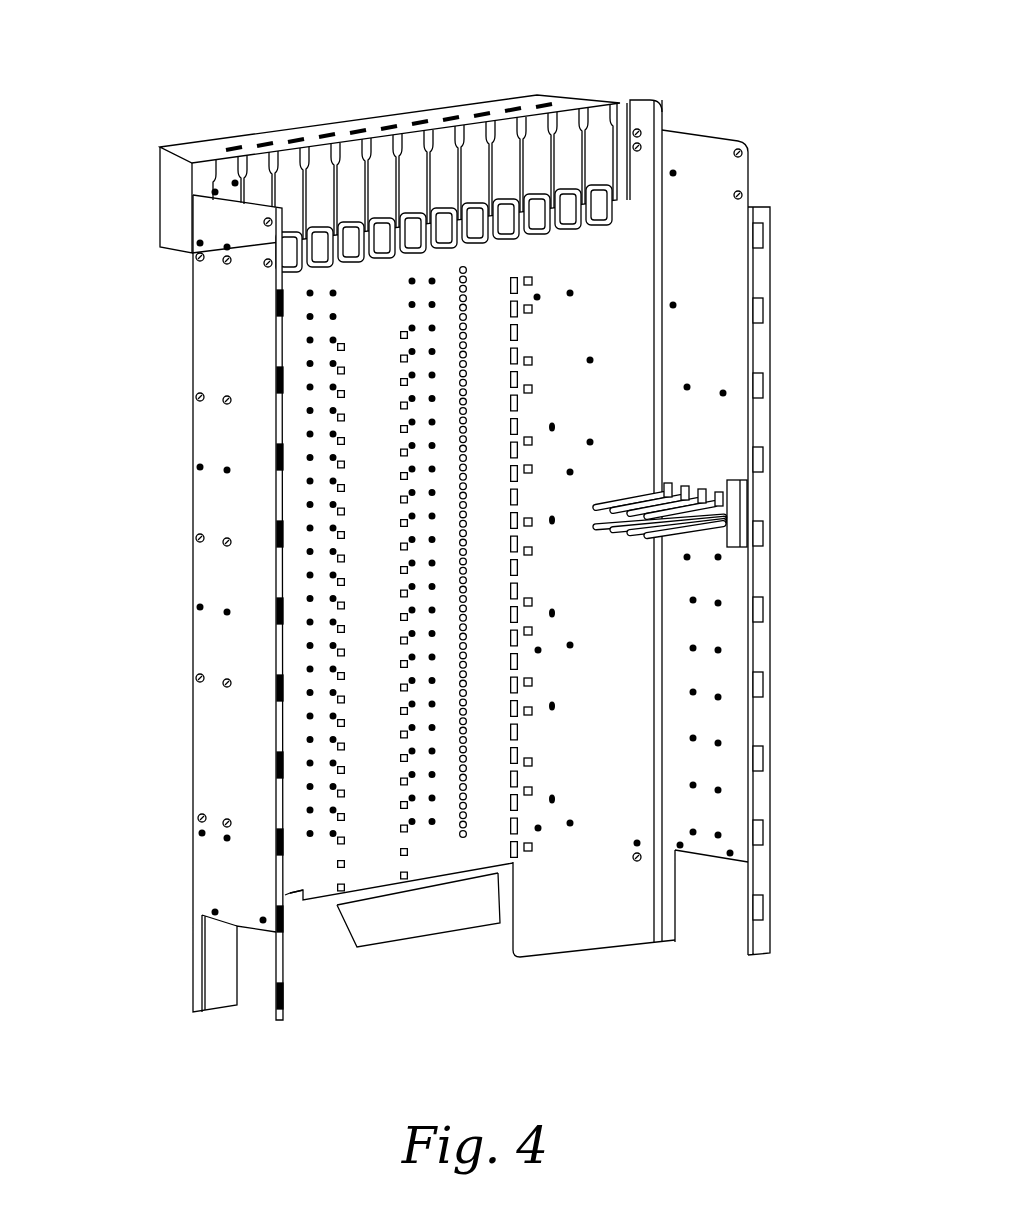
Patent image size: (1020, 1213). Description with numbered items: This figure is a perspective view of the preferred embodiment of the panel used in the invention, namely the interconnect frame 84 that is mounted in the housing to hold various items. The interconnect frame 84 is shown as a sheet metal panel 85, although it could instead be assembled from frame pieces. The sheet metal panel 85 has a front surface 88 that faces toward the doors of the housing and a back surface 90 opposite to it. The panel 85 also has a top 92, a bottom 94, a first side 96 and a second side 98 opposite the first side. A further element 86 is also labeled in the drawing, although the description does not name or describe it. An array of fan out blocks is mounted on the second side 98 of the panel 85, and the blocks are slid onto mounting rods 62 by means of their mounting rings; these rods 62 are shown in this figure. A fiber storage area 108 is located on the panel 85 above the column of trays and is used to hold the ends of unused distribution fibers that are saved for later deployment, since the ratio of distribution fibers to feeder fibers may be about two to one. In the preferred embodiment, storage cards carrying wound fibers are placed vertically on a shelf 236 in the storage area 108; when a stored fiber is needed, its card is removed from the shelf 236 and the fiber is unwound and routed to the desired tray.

The mounting rods 62 is at (723, 485).
The interconnect frame 84 is at (562, 945).
The sheet metal panel 85 is at (583, 904).
The tray 86 is at (492, 858).
The front surface 88 is at (647, 147).
The back surface 90 is at (640, 97).
The top 92 is at (187, 260).
The bottom 94 is at (291, 897).
The first side 96 is at (200, 590).
The second side 98 is at (648, 430).
The fiber storage area 108 is at (404, 132).
The shelf 236 is at (318, 243).